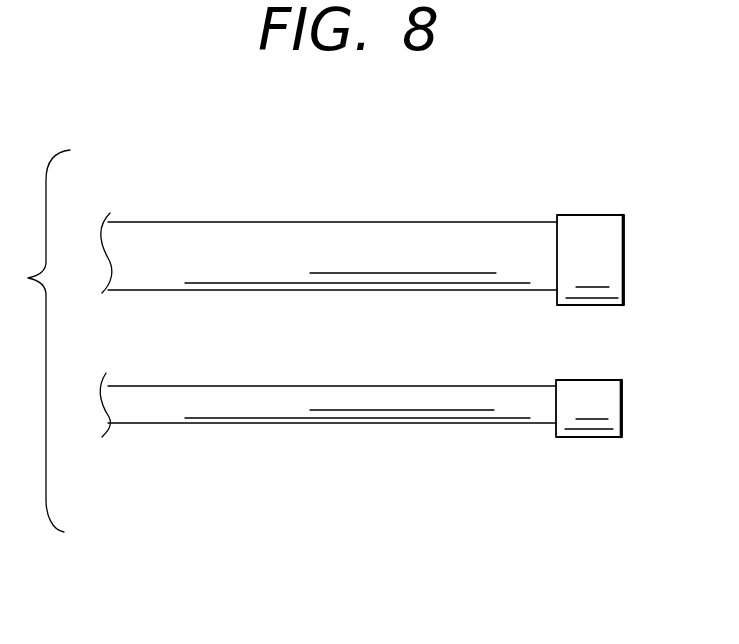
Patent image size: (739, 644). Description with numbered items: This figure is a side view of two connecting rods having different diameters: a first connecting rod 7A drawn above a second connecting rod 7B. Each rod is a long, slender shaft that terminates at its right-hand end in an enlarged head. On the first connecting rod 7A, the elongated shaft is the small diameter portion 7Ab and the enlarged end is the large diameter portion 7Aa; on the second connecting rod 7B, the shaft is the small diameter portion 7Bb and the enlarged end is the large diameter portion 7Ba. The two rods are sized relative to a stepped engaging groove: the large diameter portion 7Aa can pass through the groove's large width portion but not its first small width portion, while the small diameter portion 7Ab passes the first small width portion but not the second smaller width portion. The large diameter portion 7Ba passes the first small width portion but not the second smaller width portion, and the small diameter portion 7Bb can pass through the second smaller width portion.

The first connecting rod 7A is at (260, 208).
The large diameter portion 7Aa is at (581, 222).
The small diameter portion 7Ab is at (397, 241).
The second connecting rod 7B is at (240, 441).
The large diameter portion 7Ba is at (580, 438).
The small diameter portion 7Bb is at (442, 425).